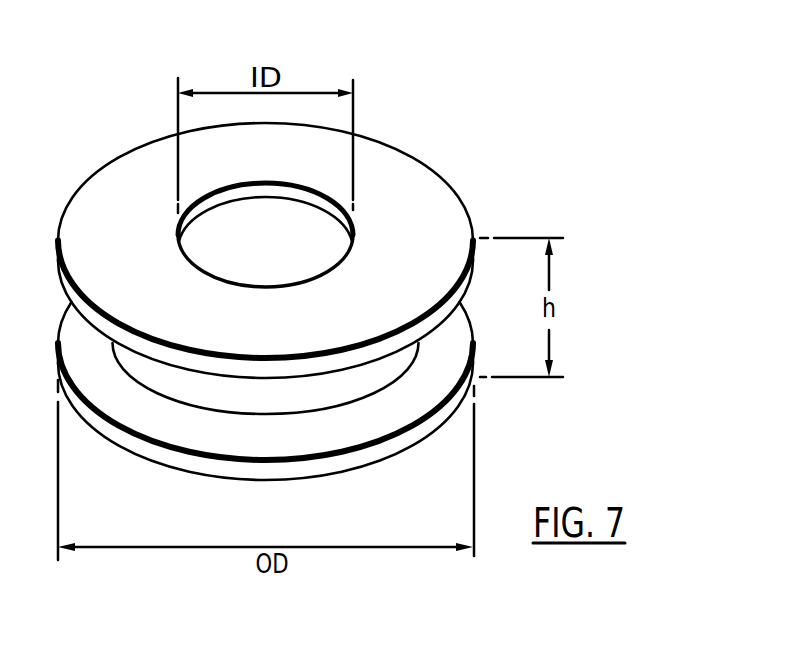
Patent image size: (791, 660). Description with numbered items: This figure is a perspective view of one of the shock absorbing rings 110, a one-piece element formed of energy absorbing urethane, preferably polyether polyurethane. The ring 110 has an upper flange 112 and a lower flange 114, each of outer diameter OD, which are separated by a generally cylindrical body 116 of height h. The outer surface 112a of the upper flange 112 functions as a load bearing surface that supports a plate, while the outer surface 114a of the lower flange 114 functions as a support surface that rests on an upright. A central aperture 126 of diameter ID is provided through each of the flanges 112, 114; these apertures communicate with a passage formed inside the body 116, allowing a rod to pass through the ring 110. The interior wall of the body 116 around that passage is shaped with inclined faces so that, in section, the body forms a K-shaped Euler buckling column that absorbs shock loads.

The ring 110 is at (524, 199).
The upper flange 112 is at (425, 203).
The outer surface of upper flange 112a is at (317, 340).
The lower flange 114 is at (335, 440).
The outer surface of lower flange 114a is at (228, 480).
The cylindrical body 116 is at (360, 383).
The central aperture 126 is at (283, 213).